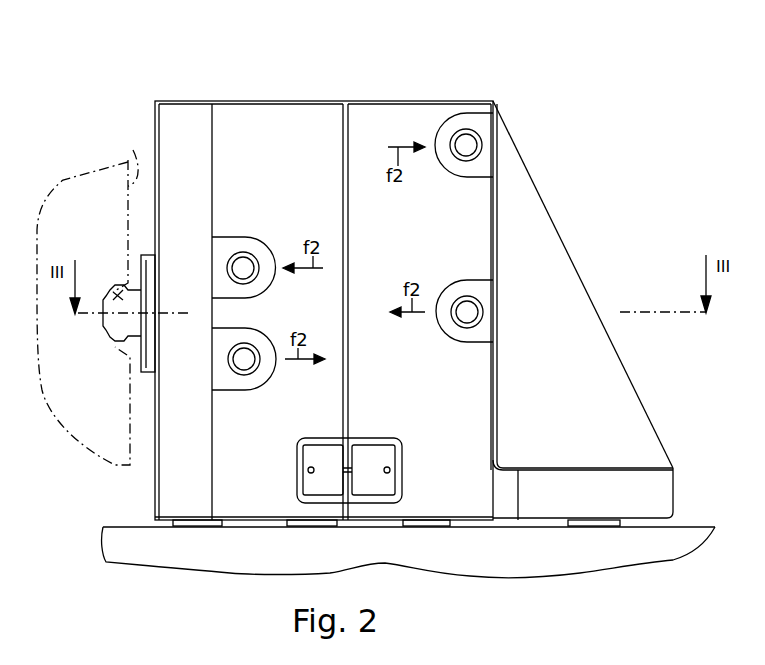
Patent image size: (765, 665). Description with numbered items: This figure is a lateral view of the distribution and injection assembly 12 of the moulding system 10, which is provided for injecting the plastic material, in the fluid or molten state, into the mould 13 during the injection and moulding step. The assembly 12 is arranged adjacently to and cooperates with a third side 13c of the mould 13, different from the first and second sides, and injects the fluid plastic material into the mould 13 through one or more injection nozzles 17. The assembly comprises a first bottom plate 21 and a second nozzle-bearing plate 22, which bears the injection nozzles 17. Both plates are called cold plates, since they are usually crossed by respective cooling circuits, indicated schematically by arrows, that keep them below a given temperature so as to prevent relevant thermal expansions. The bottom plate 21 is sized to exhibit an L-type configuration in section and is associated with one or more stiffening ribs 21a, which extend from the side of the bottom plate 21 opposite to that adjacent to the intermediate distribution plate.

The moulding system 10 is at (572, 85).
The distribution and injection assembly 12 is at (183, 67).
The mould 13 is at (62, 197).
The third side of the mould 13c is at (133, 150).
The injection nozzle 17 is at (123, 297).
The first bottom plate 21 is at (408, 118).
The stiffening rib 21a is at (566, 275).
The second nozzle-bearing plate 22 is at (278, 118).